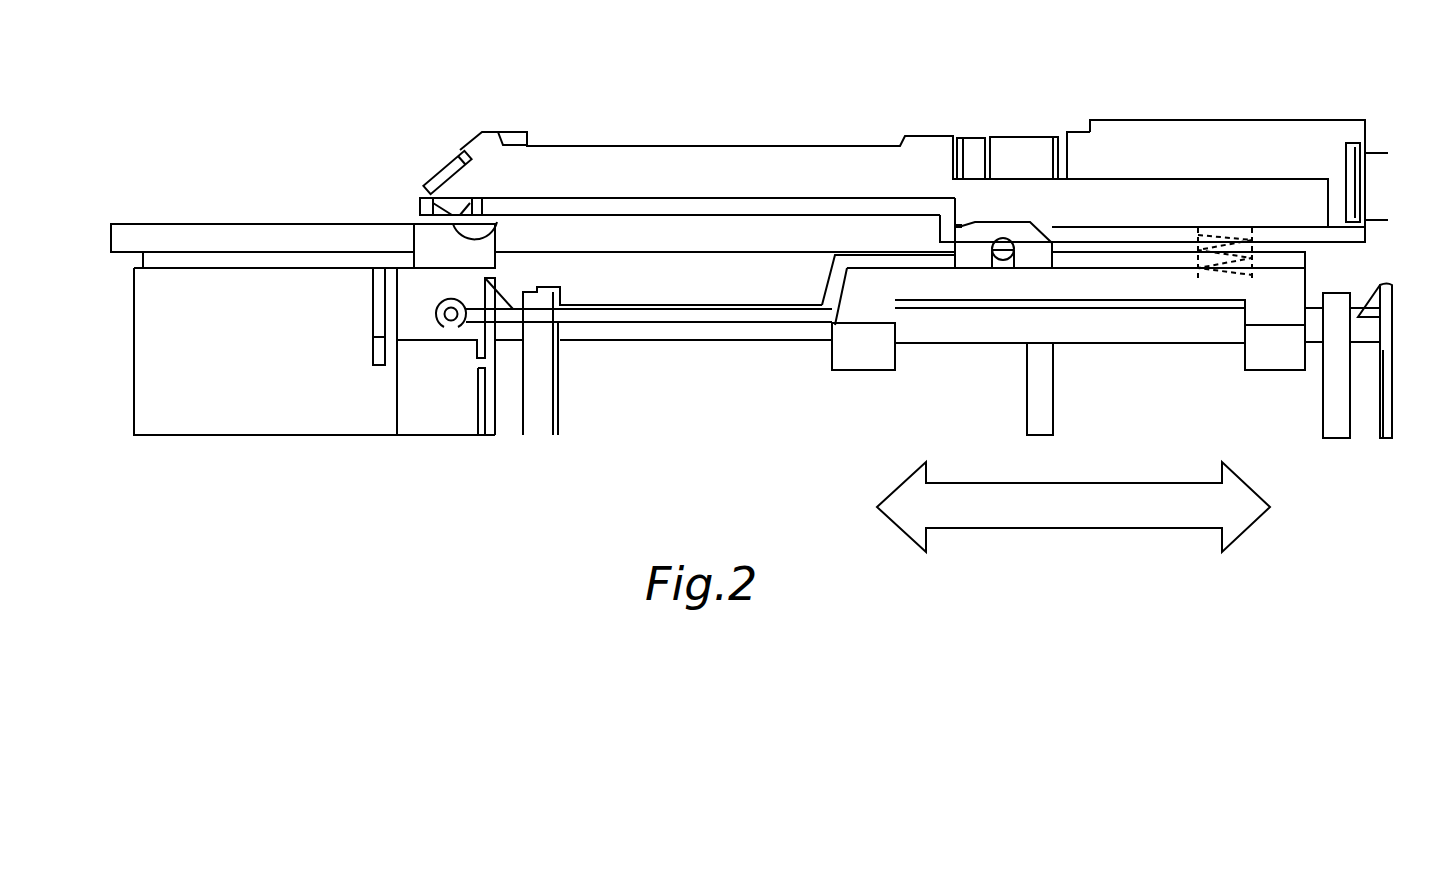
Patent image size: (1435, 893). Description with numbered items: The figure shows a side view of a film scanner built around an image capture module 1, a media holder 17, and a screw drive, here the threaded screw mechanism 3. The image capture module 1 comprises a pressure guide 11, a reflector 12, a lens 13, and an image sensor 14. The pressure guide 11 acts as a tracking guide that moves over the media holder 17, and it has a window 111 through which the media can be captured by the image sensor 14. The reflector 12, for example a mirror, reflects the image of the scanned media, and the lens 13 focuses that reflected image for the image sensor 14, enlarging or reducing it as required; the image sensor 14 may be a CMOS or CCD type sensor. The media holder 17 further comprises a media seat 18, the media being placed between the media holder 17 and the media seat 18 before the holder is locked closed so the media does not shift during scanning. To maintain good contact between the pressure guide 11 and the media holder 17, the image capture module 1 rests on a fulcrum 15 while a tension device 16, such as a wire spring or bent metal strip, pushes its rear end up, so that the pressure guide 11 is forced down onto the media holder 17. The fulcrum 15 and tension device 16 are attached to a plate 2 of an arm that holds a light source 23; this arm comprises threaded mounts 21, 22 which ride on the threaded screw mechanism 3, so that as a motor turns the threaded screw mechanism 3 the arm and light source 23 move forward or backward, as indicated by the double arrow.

The image capture module 1 is at (922, 157).
The pressure guide 11 is at (425, 197).
The reflector 12 is at (450, 153).
The window 111 is at (510, 217).
The lens 13 is at (1010, 153).
The image sensor 14 is at (1355, 148).
The fulcrum 15 is at (1003, 262).
The tension device 16 is at (1210, 283).
The media holder 17 is at (343, 231).
The media seat 18 is at (428, 249).
The plate 2 is at (1135, 287).
The threaded screw mechanism 3 is at (945, 330).
The threaded mount 21 is at (878, 358).
The threaded mount 22 is at (1278, 358).
The light source 23 is at (450, 329).